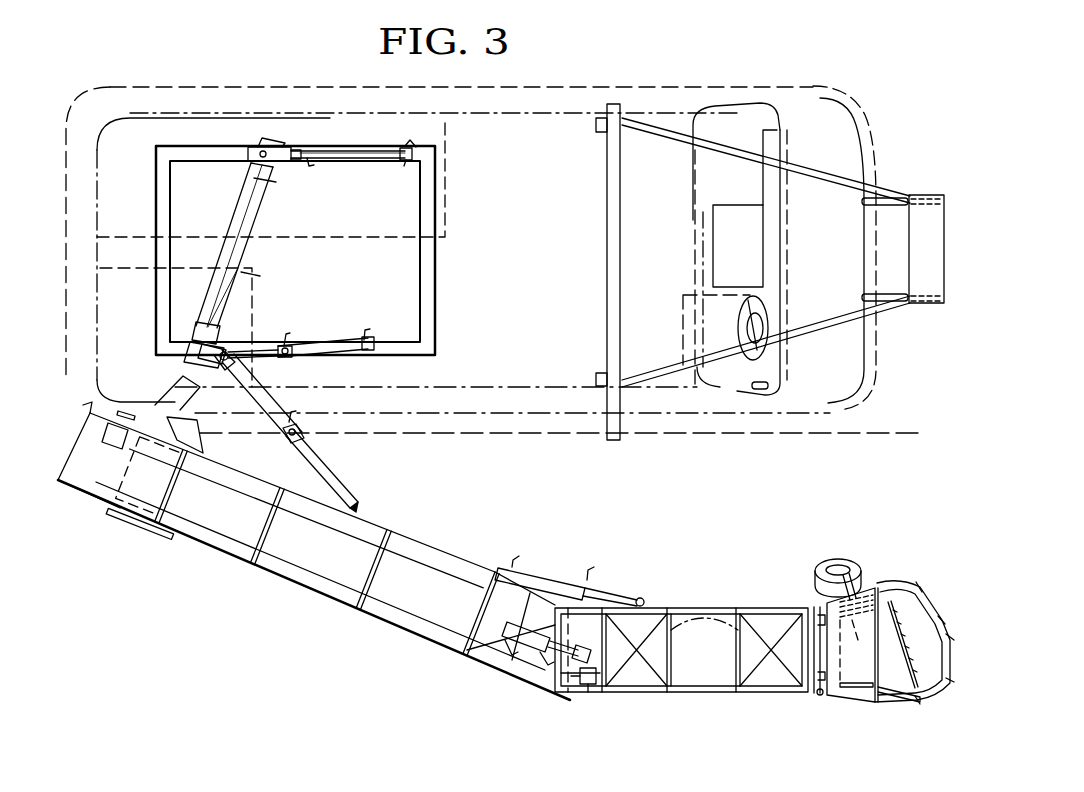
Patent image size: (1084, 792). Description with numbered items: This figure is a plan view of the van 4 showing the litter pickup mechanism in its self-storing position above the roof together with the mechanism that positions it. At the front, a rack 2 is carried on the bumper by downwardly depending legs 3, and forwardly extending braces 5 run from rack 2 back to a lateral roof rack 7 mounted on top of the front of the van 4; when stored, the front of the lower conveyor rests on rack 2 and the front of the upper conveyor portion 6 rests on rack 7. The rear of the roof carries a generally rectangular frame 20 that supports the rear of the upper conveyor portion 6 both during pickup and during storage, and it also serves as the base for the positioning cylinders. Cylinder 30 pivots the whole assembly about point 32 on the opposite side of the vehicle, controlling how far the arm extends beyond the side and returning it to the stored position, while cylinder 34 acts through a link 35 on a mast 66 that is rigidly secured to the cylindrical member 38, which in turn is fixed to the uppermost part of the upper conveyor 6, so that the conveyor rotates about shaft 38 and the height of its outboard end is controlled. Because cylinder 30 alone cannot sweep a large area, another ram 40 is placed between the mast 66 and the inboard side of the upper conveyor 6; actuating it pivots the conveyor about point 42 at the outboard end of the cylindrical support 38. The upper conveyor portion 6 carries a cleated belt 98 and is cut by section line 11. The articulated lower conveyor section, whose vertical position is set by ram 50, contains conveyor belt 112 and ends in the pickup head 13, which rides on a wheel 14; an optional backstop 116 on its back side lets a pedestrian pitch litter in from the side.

The rack 2 is at (915, 192).
The legs 3 is at (893, 207).
The van 4 is at (526, 172).
The braces 5 is at (824, 326).
The upper portion of conveyor 6 is at (300, 595).
The lateral roof rack 7 is at (620, 324).
The section line 11 is at (437, 547).
The pickup head 13 is at (868, 705).
The wheel 14 is at (862, 568).
The rectangular frame 20 is at (436, 285).
The cylinder 30 is at (378, 150).
The pivot point 32 is at (234, 344).
The cylinder 34 is at (330, 342).
The link 35 is at (262, 362).
The cylindrical member 38 is at (238, 255).
The ram 40 is at (300, 435).
The pivot point 42 is at (206, 440).
The ram 50 is at (522, 667).
The mast 66 is at (194, 340).
The cleated belt 98 is at (325, 556).
The conveyor belt 112 is at (718, 663).
The backstop 116 is at (706, 610).